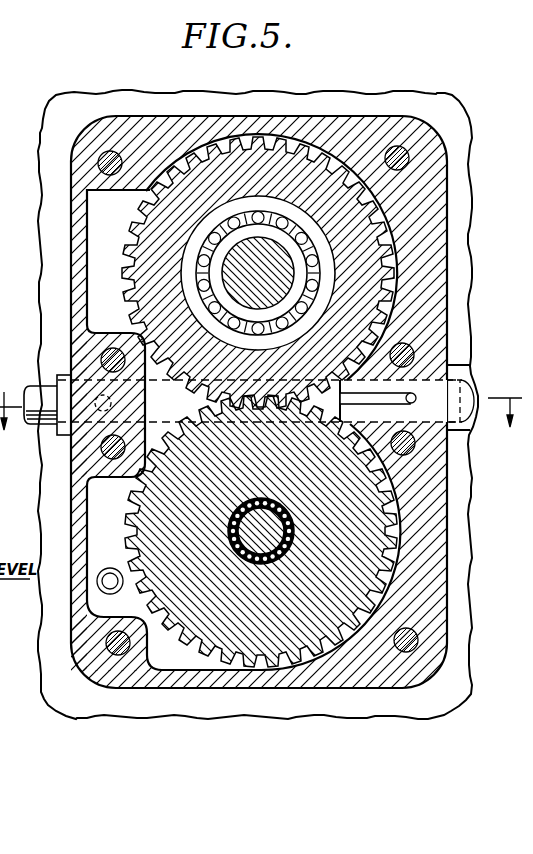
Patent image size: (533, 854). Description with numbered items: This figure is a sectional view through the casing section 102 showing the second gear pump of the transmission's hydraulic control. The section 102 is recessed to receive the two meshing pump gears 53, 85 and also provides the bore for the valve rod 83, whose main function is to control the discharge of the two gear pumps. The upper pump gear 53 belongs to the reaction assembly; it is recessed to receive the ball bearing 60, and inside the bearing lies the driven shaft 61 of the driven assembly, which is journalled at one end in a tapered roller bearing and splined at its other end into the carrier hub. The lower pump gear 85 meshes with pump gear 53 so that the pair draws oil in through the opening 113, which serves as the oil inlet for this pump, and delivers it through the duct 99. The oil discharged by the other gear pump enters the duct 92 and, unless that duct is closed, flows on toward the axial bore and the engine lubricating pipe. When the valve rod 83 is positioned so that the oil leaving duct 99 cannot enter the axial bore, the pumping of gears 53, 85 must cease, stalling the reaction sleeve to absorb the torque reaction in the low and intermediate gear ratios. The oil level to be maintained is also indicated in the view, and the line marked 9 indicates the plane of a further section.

The section 102 is at (392, 106).
The pump gear 53 is at (357, 240).
The ball bearing 60 is at (313, 297).
The driven shaft 61 is at (245, 247).
The pump gear 85 is at (367, 505).
The duct 99 is at (415, 403).
The valve rod 83 is at (33, 428).
The duct 92 is at (100, 400).
The opening 113 is at (101, 584).
The section line 9- 9 is at (261, 397).